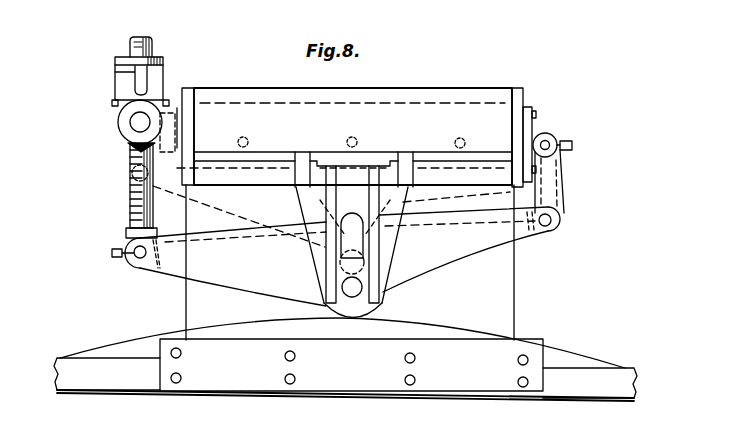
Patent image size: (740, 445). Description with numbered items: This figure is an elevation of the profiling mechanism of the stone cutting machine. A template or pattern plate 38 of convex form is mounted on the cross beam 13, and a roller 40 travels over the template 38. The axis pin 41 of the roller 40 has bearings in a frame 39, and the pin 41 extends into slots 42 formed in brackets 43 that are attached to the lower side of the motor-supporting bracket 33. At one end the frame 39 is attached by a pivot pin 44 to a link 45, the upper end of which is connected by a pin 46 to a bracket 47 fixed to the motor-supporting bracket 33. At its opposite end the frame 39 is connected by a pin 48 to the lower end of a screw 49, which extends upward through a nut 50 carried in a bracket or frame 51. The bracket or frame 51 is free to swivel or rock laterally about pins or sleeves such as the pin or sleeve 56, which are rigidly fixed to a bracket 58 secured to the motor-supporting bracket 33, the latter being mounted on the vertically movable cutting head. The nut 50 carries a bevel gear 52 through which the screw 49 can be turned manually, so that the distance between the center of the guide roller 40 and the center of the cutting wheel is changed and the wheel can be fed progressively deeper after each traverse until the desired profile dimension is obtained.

The cross beam 13 is at (628, 382).
The motor-supporting bracket 33 is at (425, 137).
The template or pattern plate 38 is at (496, 330).
The frame 39 is at (210, 248).
The roller 40 is at (375, 272).
The axis pin 41 is at (354, 292).
The slots 42 is at (345, 222).
The brackets 43 is at (325, 258).
The pivot pin 44 is at (592, 258).
The link 45 is at (552, 188).
The pin 46 is at (549, 144).
The bracket 47 is at (531, 138).
The pin 48 is at (140, 254).
The screw 49 is at (130, 192).
The nut 50 is at (128, 48).
The bracket or frame 51 is at (162, 90).
The bevel gear 52 is at (116, 104).
The pin or sleeve 56 is at (140, 122).
The bracket 58 is at (158, 140).